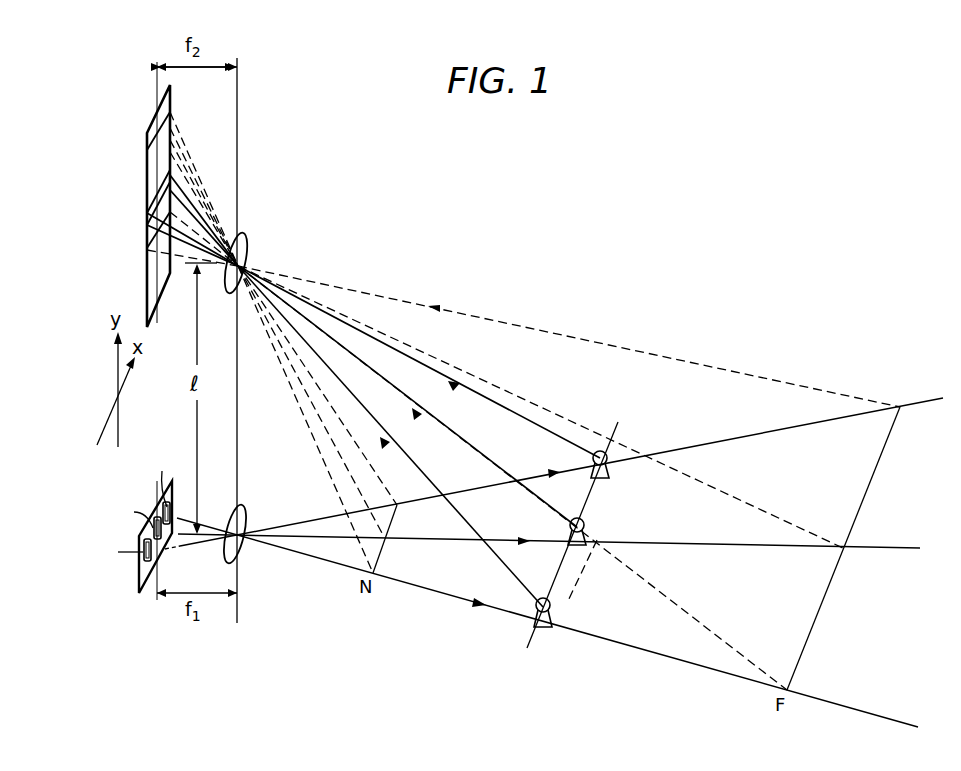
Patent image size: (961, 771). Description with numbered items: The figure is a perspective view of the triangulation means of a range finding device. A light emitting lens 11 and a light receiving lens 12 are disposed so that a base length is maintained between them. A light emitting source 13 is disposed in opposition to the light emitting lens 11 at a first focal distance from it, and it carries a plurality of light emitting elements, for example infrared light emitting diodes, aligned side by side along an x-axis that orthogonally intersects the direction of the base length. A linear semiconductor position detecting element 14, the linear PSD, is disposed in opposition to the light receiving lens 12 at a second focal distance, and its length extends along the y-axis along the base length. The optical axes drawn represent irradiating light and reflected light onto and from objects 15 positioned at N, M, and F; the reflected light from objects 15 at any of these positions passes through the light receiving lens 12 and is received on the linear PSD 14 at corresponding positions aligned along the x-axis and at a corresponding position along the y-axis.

The light emitting lens 11 is at (248, 545).
The light receiving lens 12 is at (244, 242).
The light emitting source 13 is at (150, 515).
The linear semiconductor position detecting element 14 is at (147, 187).
The objects 15 is at (540, 601).